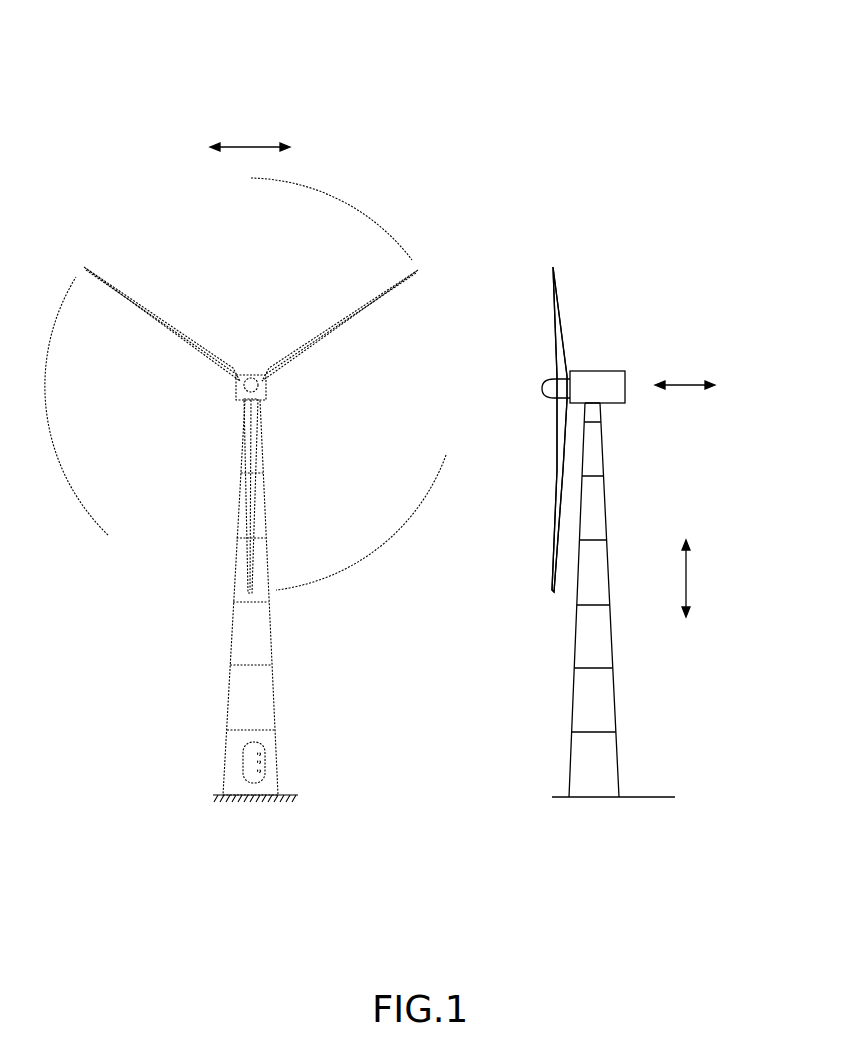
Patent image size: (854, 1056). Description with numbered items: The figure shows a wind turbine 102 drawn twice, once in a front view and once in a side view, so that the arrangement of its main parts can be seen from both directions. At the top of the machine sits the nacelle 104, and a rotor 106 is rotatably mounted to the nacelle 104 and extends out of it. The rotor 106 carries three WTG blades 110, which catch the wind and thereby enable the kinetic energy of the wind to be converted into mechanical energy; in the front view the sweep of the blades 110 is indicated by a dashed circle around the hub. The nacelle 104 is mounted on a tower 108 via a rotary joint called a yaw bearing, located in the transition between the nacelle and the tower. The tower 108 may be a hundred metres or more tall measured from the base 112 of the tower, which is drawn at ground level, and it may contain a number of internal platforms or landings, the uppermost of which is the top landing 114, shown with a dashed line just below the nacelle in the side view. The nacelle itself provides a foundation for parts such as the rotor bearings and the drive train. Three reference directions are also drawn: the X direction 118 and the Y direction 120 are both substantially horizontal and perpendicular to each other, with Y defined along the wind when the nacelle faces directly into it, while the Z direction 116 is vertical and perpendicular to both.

The wind turbine 102 is at (447, 67).
The nacelle 104 is at (236, 391).
The rotor 106 is at (539, 306).
The tower 108 is at (270, 628).
The WTG blades 110 is at (307, 330).
The base 112 is at (598, 797).
The top landing 114 is at (590, 423).
The Z direction 116 is at (688, 580).
The X direction 118 is at (248, 147).
The Y direction 120 is at (687, 383).